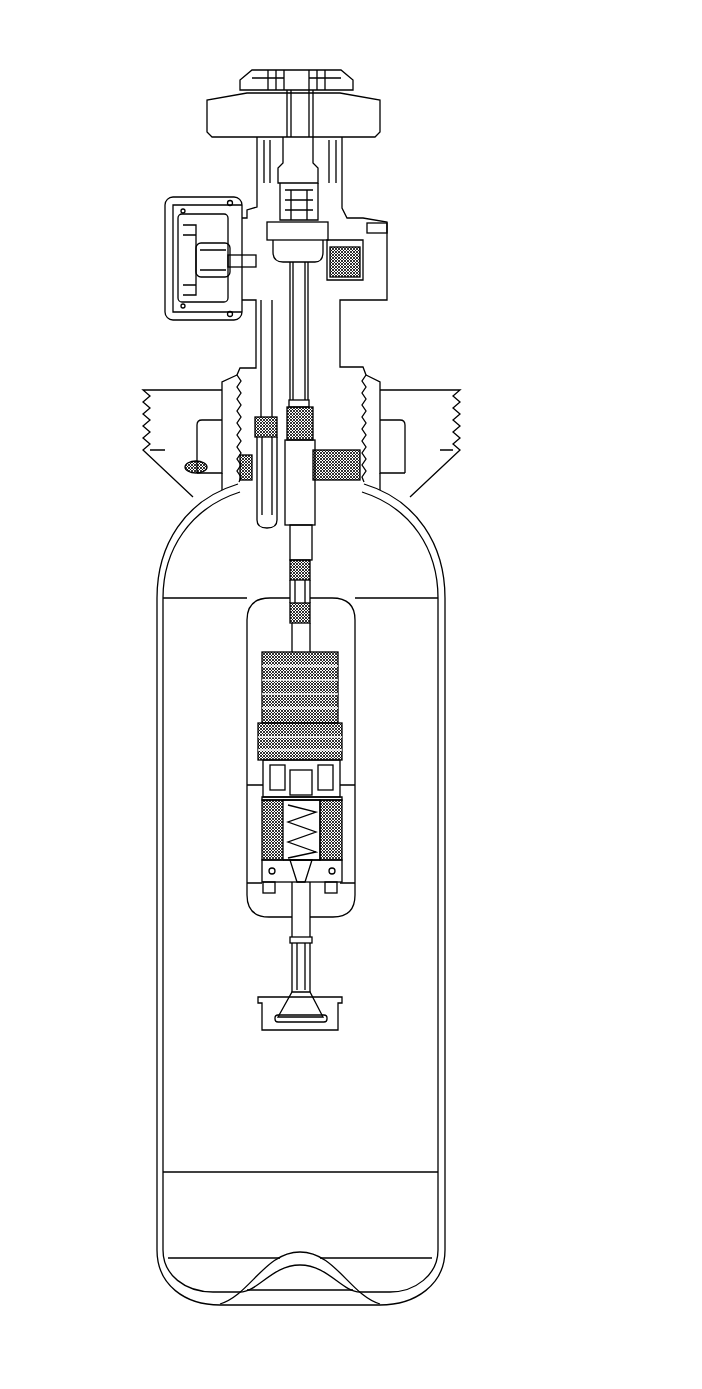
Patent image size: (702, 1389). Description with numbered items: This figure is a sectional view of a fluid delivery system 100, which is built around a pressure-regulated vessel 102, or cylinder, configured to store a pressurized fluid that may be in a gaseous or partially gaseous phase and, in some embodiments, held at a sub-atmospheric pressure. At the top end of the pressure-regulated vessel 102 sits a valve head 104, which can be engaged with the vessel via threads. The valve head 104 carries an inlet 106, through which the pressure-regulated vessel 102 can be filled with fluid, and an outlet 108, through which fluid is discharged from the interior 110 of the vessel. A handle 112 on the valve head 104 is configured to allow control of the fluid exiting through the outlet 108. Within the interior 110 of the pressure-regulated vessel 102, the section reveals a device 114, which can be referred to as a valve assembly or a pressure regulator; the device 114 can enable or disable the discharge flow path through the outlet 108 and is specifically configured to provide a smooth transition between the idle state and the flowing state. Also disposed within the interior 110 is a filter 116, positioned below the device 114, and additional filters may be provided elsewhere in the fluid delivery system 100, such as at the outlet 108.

The fluid delivery system 100 is at (502, 72).
The pressure-regulated vessel 102 is at (439, 548).
The valve head 104 is at (365, 56).
The inlet 106 is at (165, 253).
The outlet 108 is at (388, 228).
The interior 110 is at (407, 877).
The handle 112 is at (381, 112).
The device 114 is at (356, 735).
The filter 116 is at (343, 997).